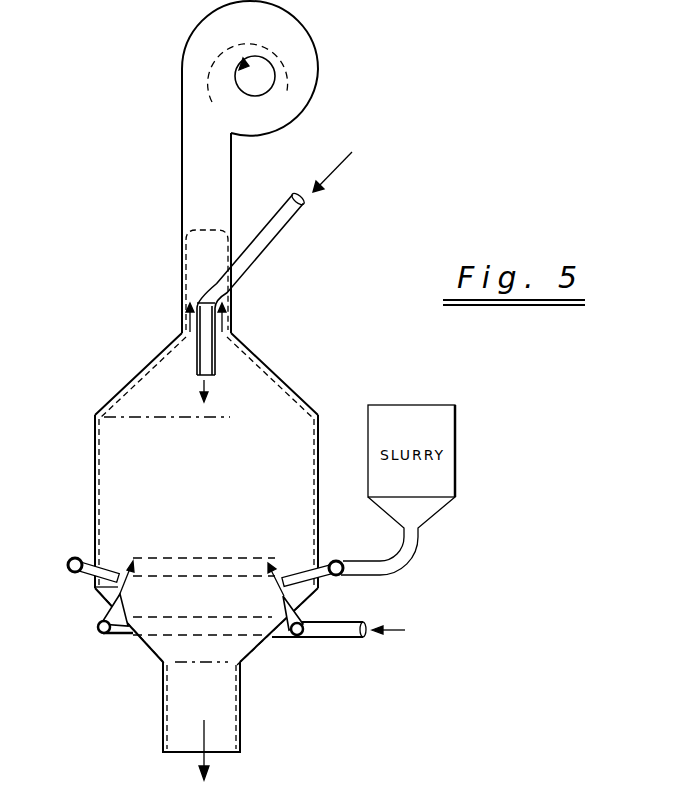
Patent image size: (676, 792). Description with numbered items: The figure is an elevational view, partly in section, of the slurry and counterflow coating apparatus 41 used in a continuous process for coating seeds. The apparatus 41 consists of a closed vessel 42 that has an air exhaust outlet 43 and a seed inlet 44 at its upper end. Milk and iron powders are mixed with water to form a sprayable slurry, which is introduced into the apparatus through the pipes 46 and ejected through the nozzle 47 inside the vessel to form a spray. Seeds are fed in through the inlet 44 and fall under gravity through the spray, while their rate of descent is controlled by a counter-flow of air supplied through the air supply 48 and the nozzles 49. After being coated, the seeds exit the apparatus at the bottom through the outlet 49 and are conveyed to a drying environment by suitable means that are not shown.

The slurry and counterflow coating apparatus 41 is at (291, 350).
The closed vessel 42 is at (314, 408).
The air exhaust outlet 43 is at (190, 160).
The seed inlet 44 is at (274, 231).
The pipes 46 is at (68, 560).
The nozzle 47 is at (110, 555).
The air supply 48 is at (330, 620).
The nozzles 49 is at (122, 609).